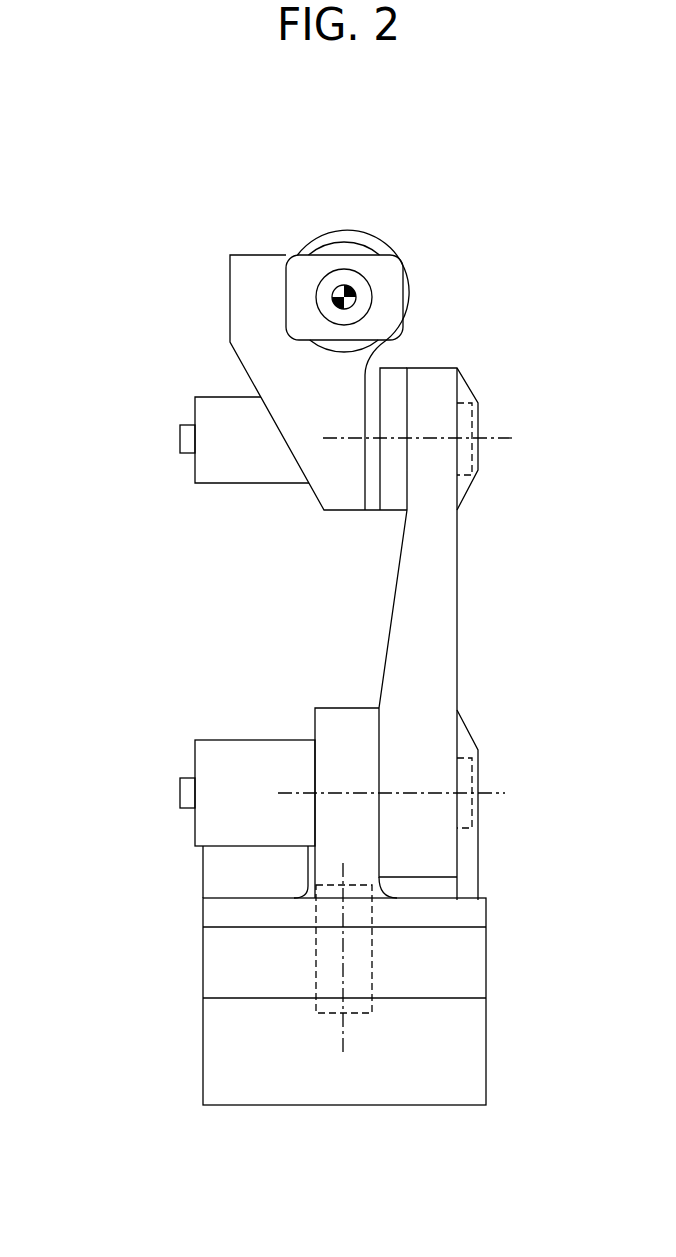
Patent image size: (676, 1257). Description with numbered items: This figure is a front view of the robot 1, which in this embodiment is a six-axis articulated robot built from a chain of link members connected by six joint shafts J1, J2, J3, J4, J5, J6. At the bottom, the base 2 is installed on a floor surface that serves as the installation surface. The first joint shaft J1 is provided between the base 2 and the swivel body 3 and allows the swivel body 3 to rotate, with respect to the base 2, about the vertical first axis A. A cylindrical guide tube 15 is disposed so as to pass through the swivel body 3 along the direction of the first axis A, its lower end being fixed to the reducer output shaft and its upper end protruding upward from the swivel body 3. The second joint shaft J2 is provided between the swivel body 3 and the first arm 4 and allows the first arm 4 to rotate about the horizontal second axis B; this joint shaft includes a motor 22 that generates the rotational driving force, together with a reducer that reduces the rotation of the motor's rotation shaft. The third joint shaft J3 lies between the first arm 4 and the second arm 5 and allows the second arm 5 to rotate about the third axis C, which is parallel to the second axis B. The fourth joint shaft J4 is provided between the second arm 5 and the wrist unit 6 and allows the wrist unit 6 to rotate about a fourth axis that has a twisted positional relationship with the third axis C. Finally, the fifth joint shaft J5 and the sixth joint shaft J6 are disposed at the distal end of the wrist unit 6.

The robot 1 is at (120, 222).
The base 2 is at (202, 1052).
The swivel body 3 is at (202, 875).
The first arm 4 is at (457, 605).
The second arm 5 is at (335, 227).
The wrist unit 6 is at (410, 280).
The guide tube 15 is at (372, 962).
The motor 22 is at (195, 755).
The first joint shaft J1 is at (175, 917).
The second joint shaft J2 is at (358, 688).
The third joint shaft J3 is at (455, 357).
The fourth joint shaft J4 is at (384, 218).
The fifth joint shaft J5 is at (295, 347).
The sixth joint shaft J6 is at (310, 270).
The first axis A is at (343, 1033).
The second axis B is at (488, 792).
The third axis C is at (502, 438).